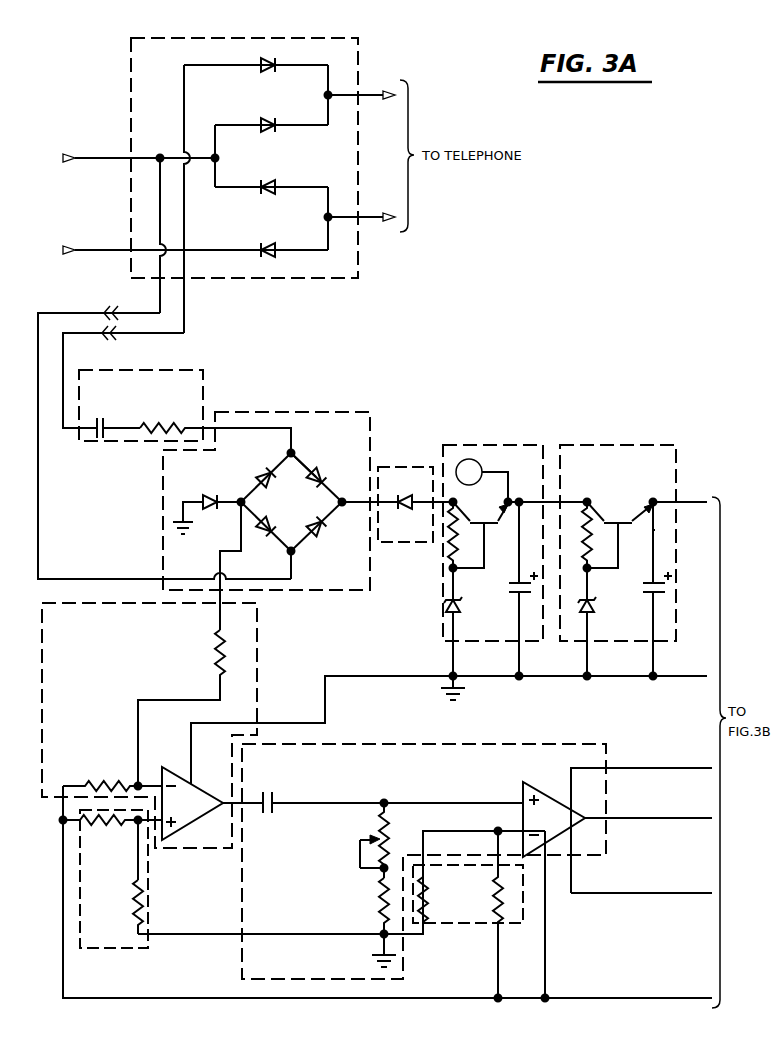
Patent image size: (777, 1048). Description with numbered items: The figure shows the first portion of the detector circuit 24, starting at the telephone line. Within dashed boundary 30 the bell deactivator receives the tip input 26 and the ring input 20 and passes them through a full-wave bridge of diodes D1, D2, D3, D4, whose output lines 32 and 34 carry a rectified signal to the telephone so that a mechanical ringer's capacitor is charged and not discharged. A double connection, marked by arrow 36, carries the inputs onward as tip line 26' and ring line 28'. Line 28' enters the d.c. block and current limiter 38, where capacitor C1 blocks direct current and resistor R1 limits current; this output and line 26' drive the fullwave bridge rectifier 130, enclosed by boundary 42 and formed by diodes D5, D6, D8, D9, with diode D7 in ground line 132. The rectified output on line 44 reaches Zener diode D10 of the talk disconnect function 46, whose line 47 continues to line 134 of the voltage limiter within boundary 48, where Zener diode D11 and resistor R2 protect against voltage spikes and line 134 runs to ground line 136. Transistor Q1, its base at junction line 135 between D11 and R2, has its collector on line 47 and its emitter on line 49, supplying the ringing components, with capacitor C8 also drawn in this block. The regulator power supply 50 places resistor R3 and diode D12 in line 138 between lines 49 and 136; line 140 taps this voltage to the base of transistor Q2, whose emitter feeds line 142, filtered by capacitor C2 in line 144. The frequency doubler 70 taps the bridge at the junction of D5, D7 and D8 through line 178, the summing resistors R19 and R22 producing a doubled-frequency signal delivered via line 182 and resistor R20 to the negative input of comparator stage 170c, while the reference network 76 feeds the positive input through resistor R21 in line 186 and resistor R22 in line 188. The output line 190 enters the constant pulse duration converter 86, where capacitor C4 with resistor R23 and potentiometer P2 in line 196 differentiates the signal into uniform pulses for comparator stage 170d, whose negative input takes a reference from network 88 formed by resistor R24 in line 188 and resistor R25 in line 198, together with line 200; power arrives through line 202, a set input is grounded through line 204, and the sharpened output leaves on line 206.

The bell deactivator function 30 is at (290, 38).
The tip line input 26 is at (139, 138).
The ring line 20 is at (112, 248).
The output line 32 is at (372, 92).
The output line 34 is at (375, 219).
The tip input 26' is at (164, 434).
The ring input 28' is at (123, 377).
The current direction arrow 36 is at (210, 312).
The circuit 24 is at (528, 338).
The d.c. block and current limiter function 38 is at (170, 370).
The rectifier bridge circuit 42 is at (315, 412).
The talk disconnect function 46 is at (398, 467).
The first regulator circuit 48 is at (485, 445).
The regulator power supply function 50 is at (618, 445).
The fullwave bridge rectifier 130 is at (301, 463).
The line 132 is at (183, 500).
The line 44 is at (362, 506).
The line 47 is at (418, 506).
The line 134 is at (442, 530).
The line 49 is at (535, 497).
The transistor base line 135 is at (519, 562).
The ground line 136 is at (620, 677).
The line 138 is at (586, 512).
The line 140 is at (590, 572).
The line 142 is at (692, 500).
The line 144 is at (656, 531).
The line 178 is at (220, 566).
The frequency doubler network 70 is at (258, 643).
The comparator stage 170c is at (186, 767).
The line 190 is at (250, 801).
The constant pulse duration converter network 86 is at (466, 744).
The comparator stage 170d is at (536, 782).
The line 202 is at (643, 768).
The line 206 is at (640, 818).
The line 204 is at (638, 893).
The line 182 is at (63, 822).
The line 196 is at (382, 815).
The line 186 is at (129, 827).
The line 188 is at (172, 934).
The reference voltage network 76 is at (115, 949).
The line 198 is at (498, 969).
The comparator input line 200 is at (548, 954).
The reference voltage network 88 is at (445, 925).
The diode D1 is at (266, 72).
The diode D2 is at (266, 132).
The diode D3 is at (268, 194).
The diode D4 is at (270, 257).
The diode D5 is at (268, 468).
The diode D6 is at (323, 476).
The diode D7 is at (217, 497).
The diode D8 is at (270, 524).
The diode D9 is at (322, 536).
The Zener diode D10 is at (414, 496).
The Zener diode D11 is at (462, 607).
The diode D12 is at (592, 612).
The capacitor C1 is at (100, 417).
The capacitor C2 is at (645, 594).
The capacitor C4 is at (276, 793).
The capacitor C8 is at (509, 587).
The resistor R1 is at (160, 423).
The resistor R2 is at (463, 535).
The resistor R3 is at (599, 535).
The resistor R19 is at (213, 654).
The resistor R20 is at (108, 785).
The resistor R21 is at (115, 825).
The resistor R22 is at (137, 902).
The resistor R23 is at (382, 910).
The resistor R24 is at (426, 880).
The resistor R25 is at (496, 909).
The potentiometer P2 is at (386, 836).
The NPN transistor function Q1 is at (481, 491).
The NPN transistor Q2 is at (620, 511).